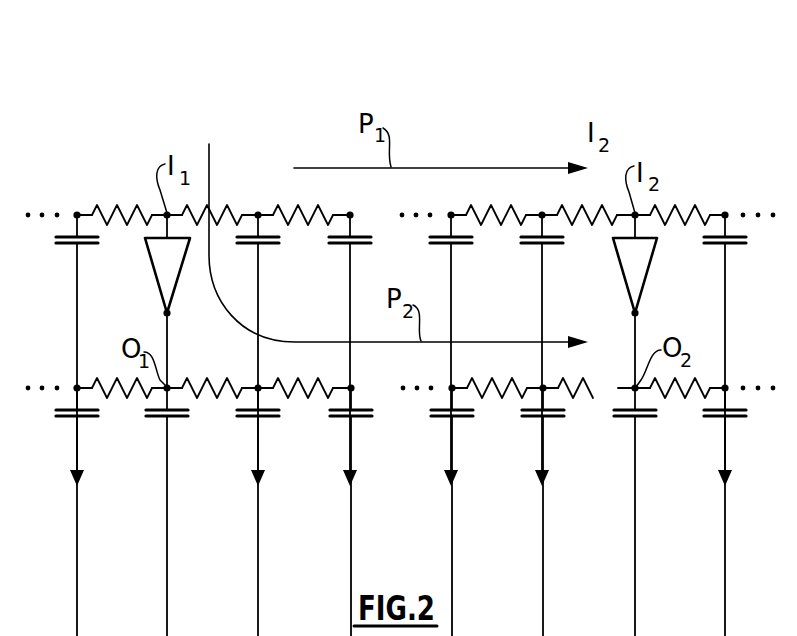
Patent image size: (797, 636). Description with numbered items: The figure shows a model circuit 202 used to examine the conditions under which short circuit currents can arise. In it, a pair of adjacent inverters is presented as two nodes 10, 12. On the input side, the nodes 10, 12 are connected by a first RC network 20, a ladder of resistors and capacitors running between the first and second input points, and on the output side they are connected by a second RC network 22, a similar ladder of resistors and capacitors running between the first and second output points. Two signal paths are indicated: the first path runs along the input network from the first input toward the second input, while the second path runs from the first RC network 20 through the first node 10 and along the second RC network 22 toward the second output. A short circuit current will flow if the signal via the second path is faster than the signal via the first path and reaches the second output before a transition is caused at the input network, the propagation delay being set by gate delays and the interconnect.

The first RC network 20 is at (133, 133).
The model circuit 202 is at (186, 76).
The node 10 is at (153, 268).
The node 12 is at (650, 266).
The second RC network 22 is at (446, 478).